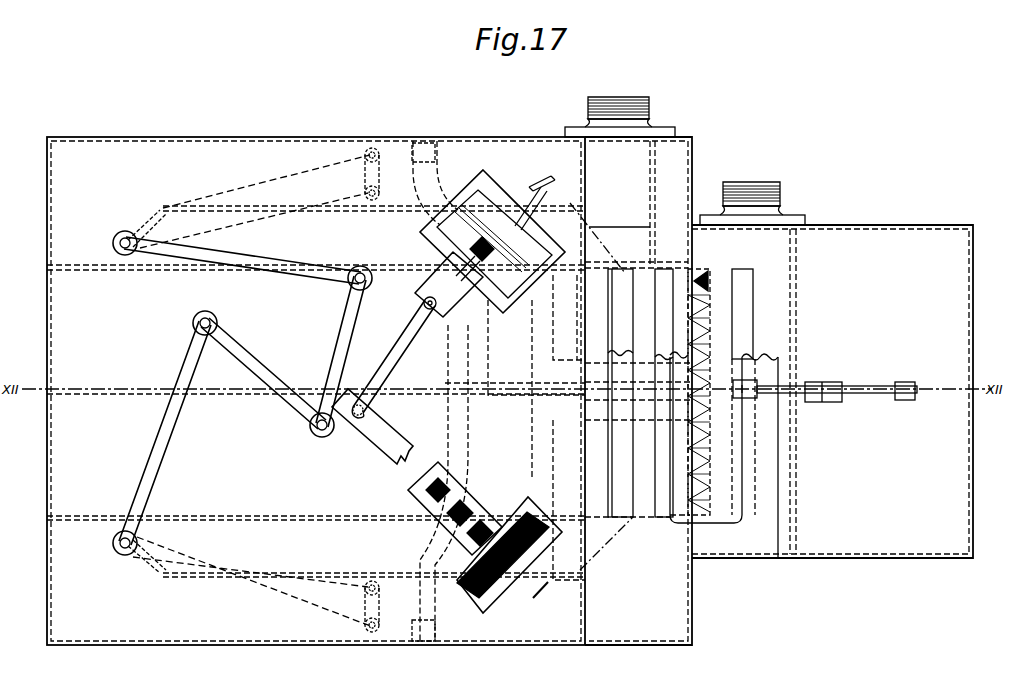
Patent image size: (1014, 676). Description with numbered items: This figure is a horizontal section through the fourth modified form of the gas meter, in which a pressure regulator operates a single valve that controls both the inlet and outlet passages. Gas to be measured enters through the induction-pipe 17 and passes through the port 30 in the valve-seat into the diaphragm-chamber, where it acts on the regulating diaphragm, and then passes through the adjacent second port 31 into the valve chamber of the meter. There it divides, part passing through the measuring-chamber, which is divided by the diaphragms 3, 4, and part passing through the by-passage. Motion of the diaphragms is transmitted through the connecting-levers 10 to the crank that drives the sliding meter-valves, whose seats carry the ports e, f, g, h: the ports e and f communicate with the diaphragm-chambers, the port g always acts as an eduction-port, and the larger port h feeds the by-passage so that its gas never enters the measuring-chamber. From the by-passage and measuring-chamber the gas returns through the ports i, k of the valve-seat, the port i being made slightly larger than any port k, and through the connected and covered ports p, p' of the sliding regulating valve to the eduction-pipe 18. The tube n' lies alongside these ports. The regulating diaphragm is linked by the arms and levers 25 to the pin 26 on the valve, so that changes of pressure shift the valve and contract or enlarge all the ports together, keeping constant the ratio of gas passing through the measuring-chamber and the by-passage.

The induction-pipe 17 is at (627, 103).
The eduction-pipe 18 is at (766, 192).
The port 30 is at (621, 268).
The second port 31 is at (664, 268).
The ports k is at (690, 328).
The port i is at (710, 280).
The tube n' is at (757, 392).
The covered port p is at (721, 454).
The covered port p' is at (712, 456).
The arms and levers 25 is at (837, 403).
The pin 26 is at (750, 400).
The diaphragm 4 is at (356, 198).
The diaphragm 3 is at (356, 584).
The connecting-levers 10 is at (296, 268).
The port e is at (418, 495).
The port g is at (444, 525).
The port f is at (462, 545).
The port h is at (475, 600).